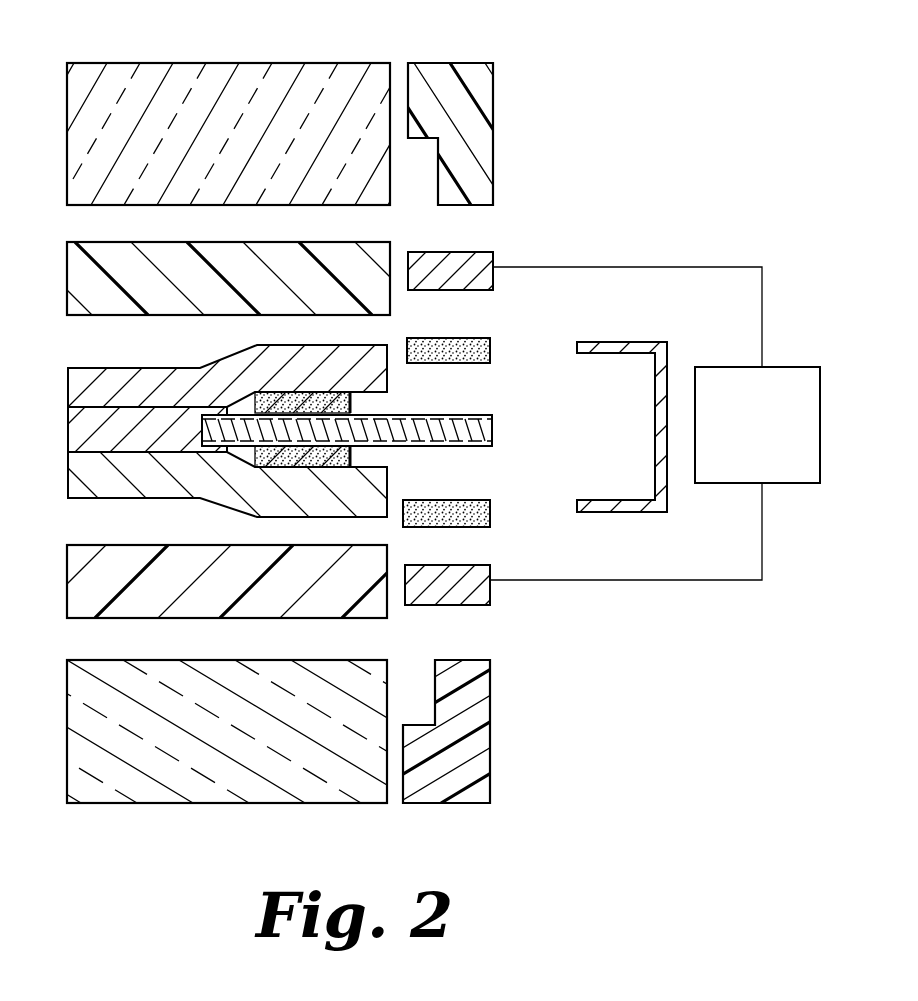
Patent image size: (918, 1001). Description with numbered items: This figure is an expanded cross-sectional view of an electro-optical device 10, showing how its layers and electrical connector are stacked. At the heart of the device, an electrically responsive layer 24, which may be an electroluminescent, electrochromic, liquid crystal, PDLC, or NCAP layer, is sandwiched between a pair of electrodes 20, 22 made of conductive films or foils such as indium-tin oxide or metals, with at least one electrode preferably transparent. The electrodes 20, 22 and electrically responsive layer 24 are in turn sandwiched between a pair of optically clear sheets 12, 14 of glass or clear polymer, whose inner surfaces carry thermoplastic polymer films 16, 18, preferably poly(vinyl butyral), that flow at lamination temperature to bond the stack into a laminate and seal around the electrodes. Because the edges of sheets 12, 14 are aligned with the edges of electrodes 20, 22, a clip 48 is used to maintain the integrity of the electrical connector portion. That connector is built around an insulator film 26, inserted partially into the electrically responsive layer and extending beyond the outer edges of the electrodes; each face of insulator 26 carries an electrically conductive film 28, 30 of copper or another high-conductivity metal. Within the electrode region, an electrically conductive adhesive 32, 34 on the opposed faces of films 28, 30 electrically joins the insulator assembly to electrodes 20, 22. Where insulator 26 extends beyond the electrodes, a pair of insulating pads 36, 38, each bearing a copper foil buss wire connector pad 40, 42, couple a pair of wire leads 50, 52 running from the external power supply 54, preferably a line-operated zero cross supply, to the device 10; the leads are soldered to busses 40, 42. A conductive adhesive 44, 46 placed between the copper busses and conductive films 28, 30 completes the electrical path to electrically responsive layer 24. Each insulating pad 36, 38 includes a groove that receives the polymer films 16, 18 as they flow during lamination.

The electro-optical device 10 is at (543, 38).
The optically clear sheet 12 is at (218, 70).
The optically clear sheet 14 is at (77, 717).
The thermoplastic polymer film 16 is at (80, 271).
The thermoplastic polymer film 18 is at (83, 593).
The electrode 20 is at (87, 380).
The electrode 22 is at (87, 477).
The electrically responsive layer 24 is at (72, 427).
The insulator film 26 is at (385, 423).
The electrically conductive film 28 is at (481, 408).
The electrically conductive film 30 is at (476, 447).
The electrically conductive adhesive 32 is at (352, 410).
The electrically conductive adhesive 34 is at (350, 446).
The insulating pad 36 is at (438, 65).
The insulating pad 38 is at (490, 678).
The copper foil buss wire connector pad 40 is at (489, 253).
The copper foil buss wire connector pad 42 is at (477, 593).
The adhesive 44 is at (497, 312).
The adhesive 46 is at (490, 513).
The clip 48 is at (641, 342).
The wire lead 50 is at (697, 266).
The wire lead 52 is at (743, 580).
The power supply 54 is at (786, 374).